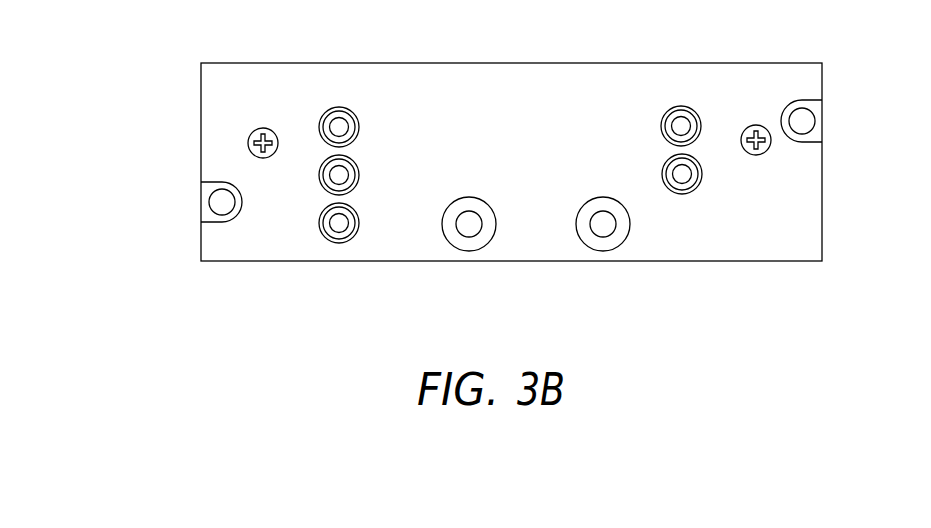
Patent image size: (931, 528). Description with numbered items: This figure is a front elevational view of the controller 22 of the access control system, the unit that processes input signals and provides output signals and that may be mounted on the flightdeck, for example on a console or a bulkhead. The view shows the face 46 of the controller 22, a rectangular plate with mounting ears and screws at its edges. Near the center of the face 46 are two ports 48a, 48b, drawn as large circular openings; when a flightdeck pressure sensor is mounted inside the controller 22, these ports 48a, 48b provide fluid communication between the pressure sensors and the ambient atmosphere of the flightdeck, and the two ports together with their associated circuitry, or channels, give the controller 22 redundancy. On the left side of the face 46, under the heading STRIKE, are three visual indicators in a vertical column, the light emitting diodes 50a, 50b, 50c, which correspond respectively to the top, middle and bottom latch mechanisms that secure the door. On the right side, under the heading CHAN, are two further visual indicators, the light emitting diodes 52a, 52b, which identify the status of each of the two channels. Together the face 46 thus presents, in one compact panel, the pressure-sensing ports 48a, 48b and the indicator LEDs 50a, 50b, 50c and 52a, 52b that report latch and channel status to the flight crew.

The controller 22 is at (157, 284).
The face 46 is at (556, 97).
The port 48a is at (492, 240).
The port 48b is at (625, 238).
The light emitting diode 50a is at (321, 119).
The light emitting diode 50b is at (323, 184).
The light emitting diode 50c is at (348, 242).
The light emitting diode 52a is at (700, 117).
The light emitting diode 52b is at (697, 185).